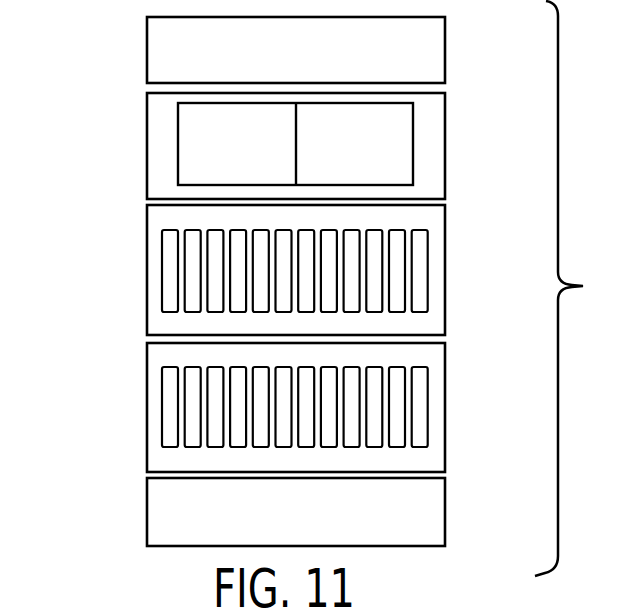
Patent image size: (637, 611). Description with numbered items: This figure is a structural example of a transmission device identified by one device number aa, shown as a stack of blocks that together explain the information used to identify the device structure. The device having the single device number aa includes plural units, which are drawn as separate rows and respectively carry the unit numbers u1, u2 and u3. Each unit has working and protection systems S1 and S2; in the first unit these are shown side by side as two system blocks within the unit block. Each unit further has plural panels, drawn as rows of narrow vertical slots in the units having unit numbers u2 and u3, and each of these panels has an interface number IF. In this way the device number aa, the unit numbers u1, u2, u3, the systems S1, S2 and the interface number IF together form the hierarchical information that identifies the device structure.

The device number aa is at (147, 53).
The unit number u1 is at (445, 148).
The unit number u2 is at (445, 275).
The unit number u3 is at (445, 412).
The working system S1 is at (178, 123).
The protection system S2 is at (295, 175).
The interface number IF is at (193, 262).